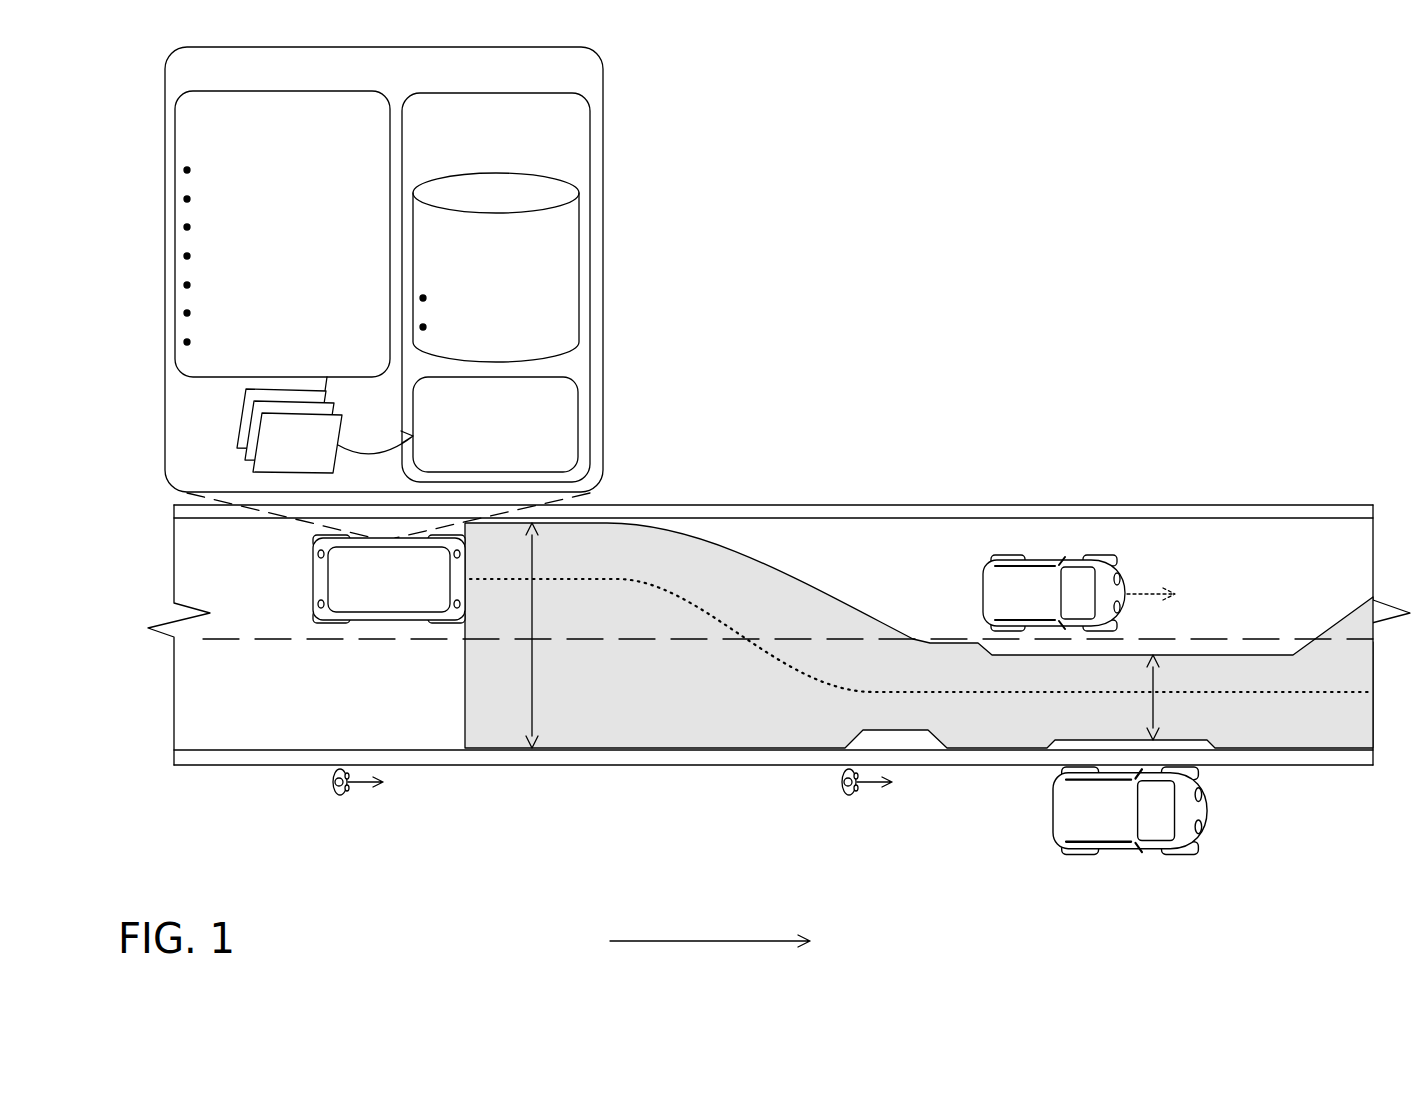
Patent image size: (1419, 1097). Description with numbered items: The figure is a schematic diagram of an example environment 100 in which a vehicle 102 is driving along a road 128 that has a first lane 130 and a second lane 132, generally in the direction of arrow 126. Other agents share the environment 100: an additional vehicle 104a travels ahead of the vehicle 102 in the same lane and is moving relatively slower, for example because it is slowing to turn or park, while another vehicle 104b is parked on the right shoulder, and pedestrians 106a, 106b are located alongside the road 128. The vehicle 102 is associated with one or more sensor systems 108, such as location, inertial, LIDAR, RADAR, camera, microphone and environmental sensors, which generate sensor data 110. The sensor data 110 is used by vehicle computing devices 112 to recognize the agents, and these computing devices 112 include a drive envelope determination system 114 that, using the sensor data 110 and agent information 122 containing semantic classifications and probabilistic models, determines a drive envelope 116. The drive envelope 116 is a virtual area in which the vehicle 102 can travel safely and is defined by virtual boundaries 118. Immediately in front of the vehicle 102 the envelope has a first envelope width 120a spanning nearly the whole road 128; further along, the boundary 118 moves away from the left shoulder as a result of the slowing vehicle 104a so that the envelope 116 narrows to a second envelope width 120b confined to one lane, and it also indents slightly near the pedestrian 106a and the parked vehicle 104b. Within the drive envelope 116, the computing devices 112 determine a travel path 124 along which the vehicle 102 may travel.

The environment 100 is at (1135, 198).
The vehicle 102 is at (437, 84).
The vehicle 104a is at (1050, 607).
The vehicle 104b is at (1123, 824).
The pedestrian 106a is at (841, 798).
The pedestrian 106b is at (333, 797).
The sensor system 108 is at (298, 152).
The sensor data 110 is at (267, 447).
The vehicle computing device 112 is at (557, 154).
The drive envelope determination system 114 is at (512, 466).
The drive envelope 116 is at (612, 718).
The virtual boundary 118 is at (787, 570).
The first envelope width 120a is at (535, 662).
The second envelope width 120b is at (1153, 718).
The agent information 122 is at (568, 277).
The travel path 124 is at (788, 665).
The arrow 126 is at (710, 925).
The road 128 is at (1262, 510).
The first lane 130 is at (265, 589).
The second lane 132 is at (265, 704).